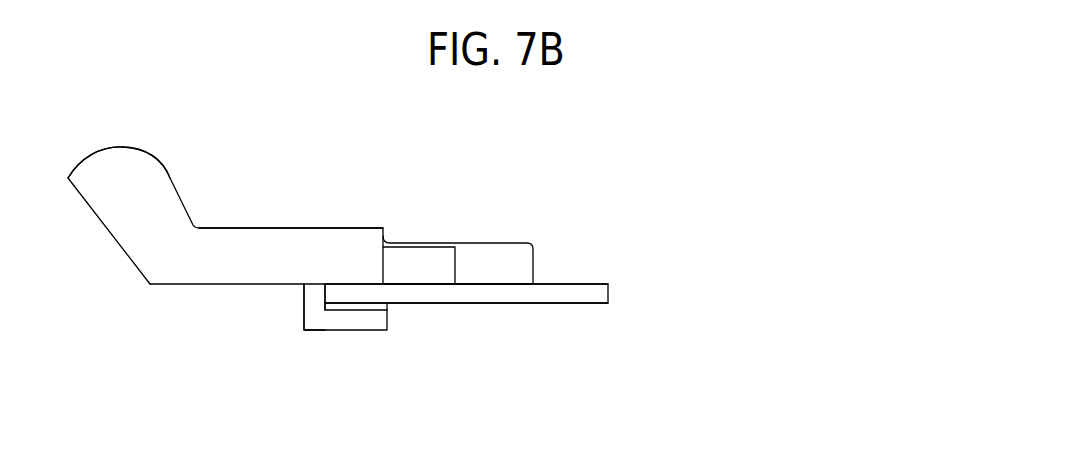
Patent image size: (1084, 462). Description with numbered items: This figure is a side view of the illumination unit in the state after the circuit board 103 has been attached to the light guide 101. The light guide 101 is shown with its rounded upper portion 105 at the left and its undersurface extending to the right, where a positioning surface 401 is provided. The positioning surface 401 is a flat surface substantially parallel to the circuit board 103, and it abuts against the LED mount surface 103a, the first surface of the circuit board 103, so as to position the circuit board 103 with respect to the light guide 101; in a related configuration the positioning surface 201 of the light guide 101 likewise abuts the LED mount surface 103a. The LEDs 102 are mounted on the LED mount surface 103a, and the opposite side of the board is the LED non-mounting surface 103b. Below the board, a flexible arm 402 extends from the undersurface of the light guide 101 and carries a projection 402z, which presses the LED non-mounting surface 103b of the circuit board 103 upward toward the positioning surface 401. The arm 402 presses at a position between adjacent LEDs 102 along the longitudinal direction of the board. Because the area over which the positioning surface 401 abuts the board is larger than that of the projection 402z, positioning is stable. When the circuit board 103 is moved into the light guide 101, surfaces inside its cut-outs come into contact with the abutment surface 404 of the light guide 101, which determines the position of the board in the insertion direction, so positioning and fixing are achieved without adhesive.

The light guide 101 is at (202, 255).
The arm head portion 105 is at (98, 150).
The positioning surface 401 is at (352, 283).
The LED 102 is at (437, 267).
The positioning surface 201 is at (492, 286).
The circuit board 103 is at (578, 295).
The LED mount surface 103a is at (567, 284).
The LED non-mounting surface 103b is at (588, 303).
The arm 402 is at (332, 322).
The projection 402z is at (372, 306).
The abutment surface 404 is at (323, 295).